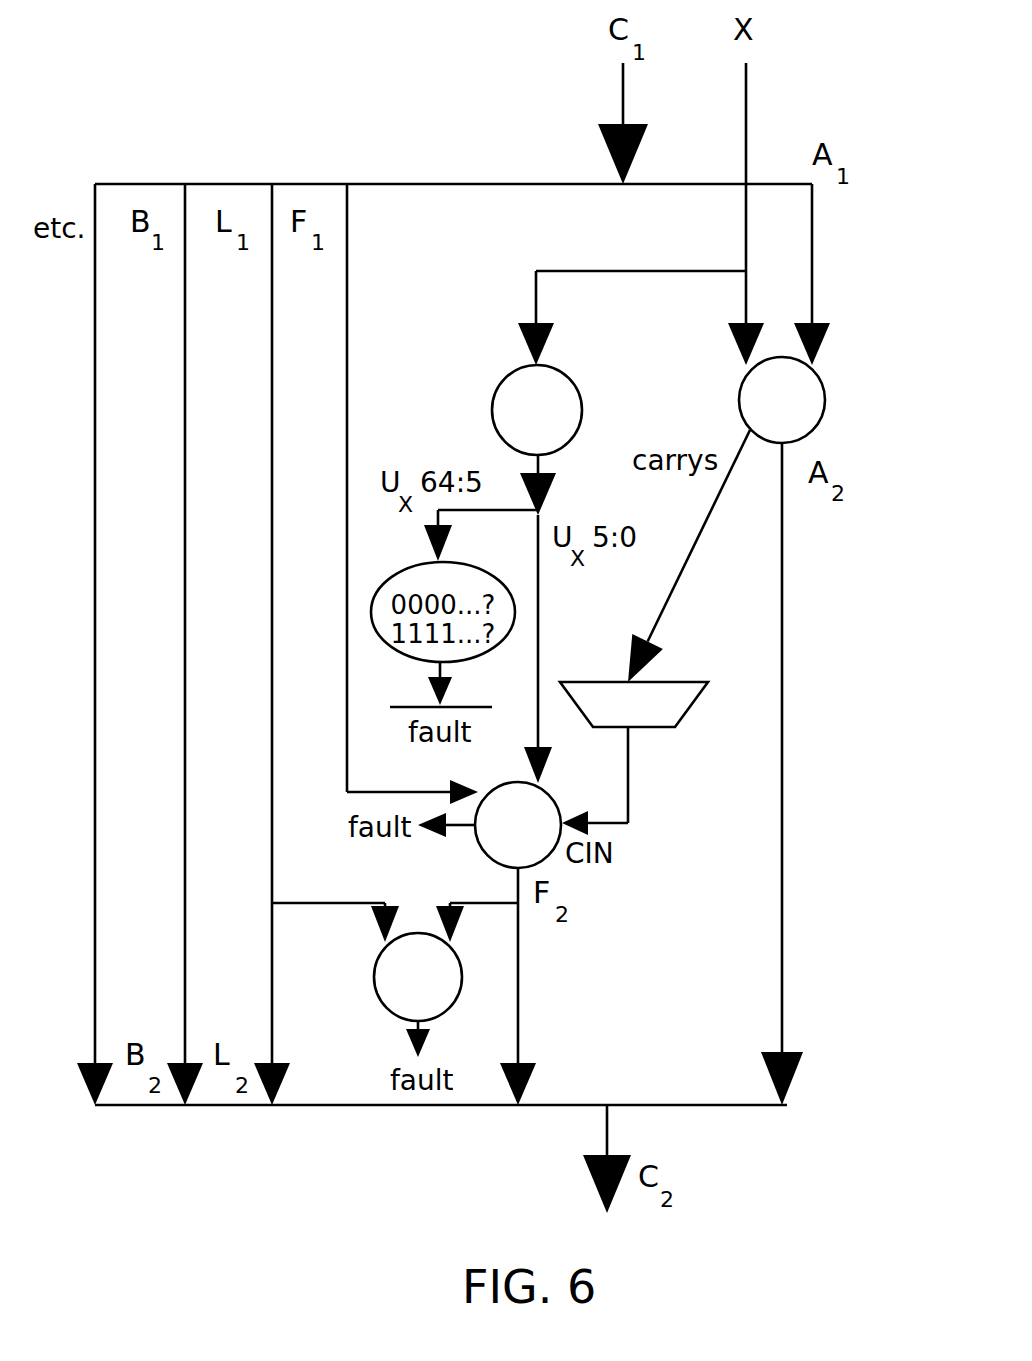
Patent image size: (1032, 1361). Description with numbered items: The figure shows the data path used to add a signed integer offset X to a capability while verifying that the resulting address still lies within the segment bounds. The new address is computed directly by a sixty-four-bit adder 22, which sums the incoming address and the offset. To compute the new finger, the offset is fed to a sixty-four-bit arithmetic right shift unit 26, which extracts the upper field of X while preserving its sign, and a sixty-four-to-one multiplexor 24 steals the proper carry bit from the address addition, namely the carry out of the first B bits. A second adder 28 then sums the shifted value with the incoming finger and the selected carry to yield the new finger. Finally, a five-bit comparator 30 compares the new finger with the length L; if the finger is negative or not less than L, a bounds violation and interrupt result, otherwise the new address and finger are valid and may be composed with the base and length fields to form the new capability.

The 64-bit adder 22 is at (826, 392).
The 64:1 multiplexor 24 is at (680, 680).
The 64-bit arithmetic right shift unit 26 is at (583, 393).
The 64-bit adder 28 is at (552, 795).
The 5-bit comparator 30 is at (375, 995).